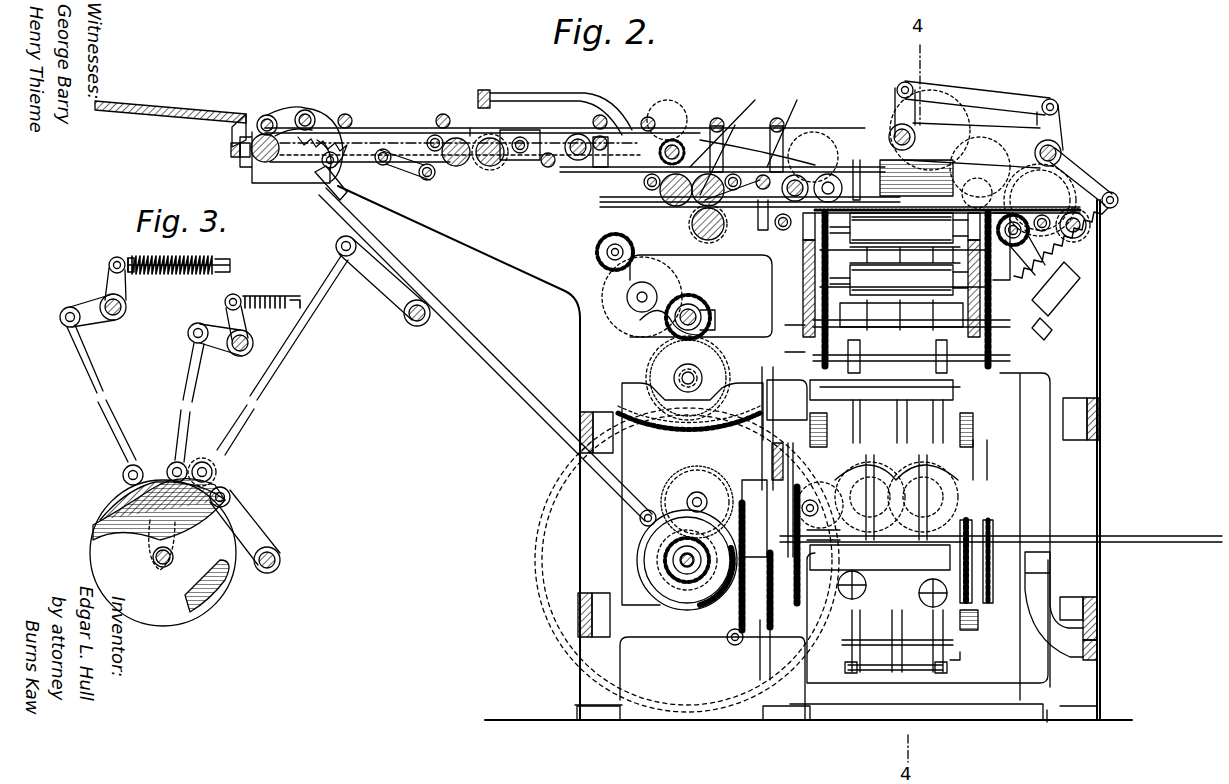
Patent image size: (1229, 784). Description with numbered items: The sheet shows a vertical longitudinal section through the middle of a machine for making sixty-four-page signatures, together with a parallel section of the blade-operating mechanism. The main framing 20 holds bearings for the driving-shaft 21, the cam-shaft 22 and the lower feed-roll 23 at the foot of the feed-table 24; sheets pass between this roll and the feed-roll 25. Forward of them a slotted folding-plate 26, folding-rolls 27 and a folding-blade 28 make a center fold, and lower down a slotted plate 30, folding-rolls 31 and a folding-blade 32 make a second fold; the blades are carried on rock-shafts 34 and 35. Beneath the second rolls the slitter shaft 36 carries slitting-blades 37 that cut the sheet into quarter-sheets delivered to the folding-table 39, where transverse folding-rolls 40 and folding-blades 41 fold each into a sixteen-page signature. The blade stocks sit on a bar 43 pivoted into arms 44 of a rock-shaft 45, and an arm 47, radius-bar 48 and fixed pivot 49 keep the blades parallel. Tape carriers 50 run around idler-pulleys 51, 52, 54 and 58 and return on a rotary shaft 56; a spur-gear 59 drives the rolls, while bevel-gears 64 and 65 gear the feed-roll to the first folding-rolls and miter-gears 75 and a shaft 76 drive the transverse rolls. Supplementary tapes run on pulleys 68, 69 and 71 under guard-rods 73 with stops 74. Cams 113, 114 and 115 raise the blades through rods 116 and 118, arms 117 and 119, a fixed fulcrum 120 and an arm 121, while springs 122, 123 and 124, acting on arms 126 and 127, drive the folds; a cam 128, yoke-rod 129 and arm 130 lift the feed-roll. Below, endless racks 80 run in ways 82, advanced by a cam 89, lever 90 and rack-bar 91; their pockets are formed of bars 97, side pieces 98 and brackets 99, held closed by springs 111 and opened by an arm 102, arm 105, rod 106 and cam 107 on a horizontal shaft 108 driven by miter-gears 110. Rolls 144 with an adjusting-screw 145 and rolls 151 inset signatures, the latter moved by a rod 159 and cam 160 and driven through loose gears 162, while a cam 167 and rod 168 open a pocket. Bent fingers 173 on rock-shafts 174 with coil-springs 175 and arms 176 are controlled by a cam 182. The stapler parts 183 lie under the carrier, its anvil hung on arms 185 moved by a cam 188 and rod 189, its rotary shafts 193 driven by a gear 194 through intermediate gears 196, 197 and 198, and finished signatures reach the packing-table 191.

In FIG. 2, the main framing 20 is at (735, 454).
In FIG. 2, the driving-shaft 21 is at (680, 322).
In FIG. 2, the cam-shaft 22 is at (682, 572).
In FIG. 3, the cam-shaft 22 is at (163, 568).
In FIG. 2, the lower feed-roll 23 is at (272, 165).
In FIG. 2, the feed-table 24 is at (170, 119).
In FIG. 2, the feed-roll 25 is at (265, 114).
In FIG. 3, the feed-roll 25 is at (110, 268).
In FIG. 2, the slotted folding-plate 26 is at (478, 134).
In FIG. 2, the folding-roll 27 is at (455, 167).
In FIG. 2, the folding-blade 28 is at (488, 94).
In FIG. 2, the slotted plate 30 is at (740, 150).
In FIG. 2, the folding-roll 31 is at (700, 205).
In FIG. 2, the folding-blade 32 is at (690, 210).
In FIG. 2, the rock-shaft 34 is at (578, 134).
In FIG. 3, the rock-shaft 34 is at (126, 312).
In FIG. 2, the rock-shaft 35 is at (797, 160).
In FIG. 3, the rock-shaft 35 is at (252, 336).
In FIG. 2, the shaft of the rotary slitter 36 is at (640, 255).
In FIG. 2, the slitting-blades 37 is at (700, 240).
In FIG. 2, the folding-table 39 is at (1013, 186).
In FIG. 2, the folding-rolls 40 is at (820, 205).
In FIG. 2, the folding-blades 41 is at (880, 165).
In FIG. 2, the bar 43 is at (893, 128).
In FIG. 2, the arms 44 is at (972, 145).
In FIG. 2, the rock-shaft 45 is at (1060, 150).
In FIG. 2, the arm 47 is at (905, 125).
In FIG. 2, the radius-bar 48 is at (975, 92).
In FIG. 2, the fixed pivot 49 is at (1058, 108).
In FIG. 2, the carrier 50 is at (382, 166).
In FIG. 2, the idler-pulley 51 is at (432, 134).
In FIG. 2, the idler-pulley 52 is at (426, 180).
In FIG. 2, the idler-pulley 54 is at (231, 152).
In FIG. 2, the rotary shaft 56 is at (1090, 230).
In FIG. 2, the idler-pulleys 58 is at (784, 232).
In FIG. 2, the spur-gear 59 is at (705, 290).
In FIG. 2, the bevel-gear 64 is at (372, 140).
In FIG. 2, the bevel-gear 65 is at (246, 168).
In FIG. 2, the carrying pulleys 68 is at (718, 118).
In FIG. 2, the carrying pulleys 69 is at (522, 136).
In FIG. 2, the carrying pulleys 71 is at (817, 171).
In FIG. 2, the stationary guard-rods 73 is at (604, 118).
In FIG. 2, the stops 74 is at (652, 116).
In FIG. 2, the miter-gears 75 is at (1040, 238).
In FIG. 2, the shaft 76 is at (1015, 245).
In FIG. 2, the endless toothed racks 80 is at (812, 425).
In FIG. 2, the stationary horizontal ways 82 is at (1000, 415).
In FIG. 2, the cam 89 is at (655, 580).
In FIG. 2, the lever 90 is at (735, 645).
In FIG. 2, the rack-bar 91 is at (706, 654).
In FIG. 2, the horizontal bar 97 is at (910, 486).
In FIG. 2, the side pieces 98 is at (945, 432).
In FIG. 2, the brackets 99 is at (848, 610).
In FIG. 2, the rearwardly-projecting arm 102 is at (827, 670).
In FIG. 2, the arm 105 is at (792, 470).
In FIG. 2, the rod 106 is at (778, 468).
In FIG. 2, the cam 107 is at (836, 582).
In FIG. 2, the horizontal shaft 108 is at (925, 585).
In FIG. 2, the miter-gears 110 is at (690, 575).
In FIG. 2, the springs 111 is at (958, 642).
In FIG. 3, the cam 113 is at (118, 500).
In FIG. 3, the cam 114 is at (98, 532).
In FIG. 3, the cam 115 is at (256, 528).
In FIG. 3, the rod 116 is at (110, 400).
In FIG. 3, the arm 117 is at (100, 322).
In FIG. 3, the rod 118 is at (197, 412).
In FIG. 3, the arm 119 is at (220, 345).
In FIG. 3, the fixed fulcrum 120 is at (275, 382).
In FIG. 2, the arm 121 is at (366, 265).
In FIG. 3, the spring 122 is at (180, 272).
In FIG. 3, the spring 123 is at (240, 300).
In FIG. 2, the spring 124 is at (1090, 258).
In FIG. 3, the arm 126 is at (215, 331).
In FIG. 2, the arm 127 is at (1100, 185).
In FIG. 2, the cam 128 is at (640, 565).
In FIG. 2, the yoke-rod 129 is at (488, 352).
In FIG. 2, the arm 130 is at (312, 110).
In FIG. 2, the rolls 144 is at (906, 290).
In FIG. 2, the adjusting-screw 145 is at (975, 500).
In FIG. 2, the rolls 151 is at (760, 355).
In FIG. 2, the rod 159 is at (1010, 464).
In FIG. 2, the cam 160 is at (995, 555).
In FIG. 2, the loose gears 162 is at (779, 335).
In FIG. 2, the cam 167 is at (993, 540).
In FIG. 2, the rod 168 is at (975, 530).
In FIG. 2, the bent fingers 173 is at (850, 674).
In FIG. 2, the rock-shafts 174 is at (880, 652).
In FIG. 2, the coil-springs 175 is at (920, 675).
In FIG. 2, the arm 176 is at (958, 658).
In FIG. 2, the cam 182 is at (920, 592).
In FIG. 2, the stapler parts 183 is at (884, 512).
In FIG. 2, the arms 185 is at (808, 400).
In FIG. 2, the cam 188 is at (758, 660).
In FIG. 2, the rod 189 is at (775, 414).
In FIG. 2, the packing-table 191 is at (1001, 526).
In FIG. 2, the rotary shafts 193 is at (908, 508).
In FIG. 2, the gear 194 is at (665, 560).
In FIG. 2, the intermediate gear 196 is at (690, 496).
In FIG. 2, the intermediate gear 197 is at (740, 490).
In FIG. 2, the intermediate gear 198 is at (819, 500).